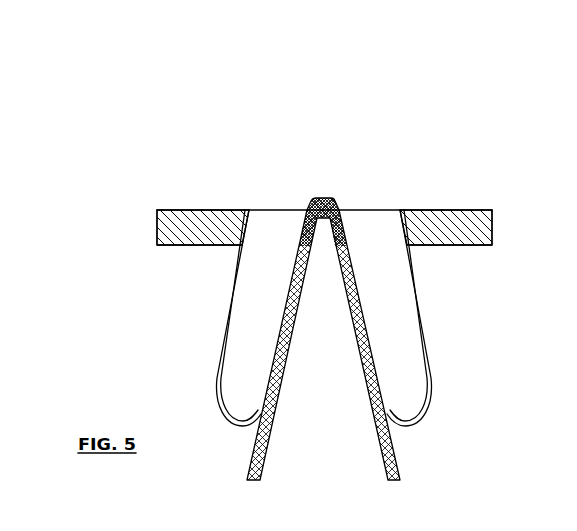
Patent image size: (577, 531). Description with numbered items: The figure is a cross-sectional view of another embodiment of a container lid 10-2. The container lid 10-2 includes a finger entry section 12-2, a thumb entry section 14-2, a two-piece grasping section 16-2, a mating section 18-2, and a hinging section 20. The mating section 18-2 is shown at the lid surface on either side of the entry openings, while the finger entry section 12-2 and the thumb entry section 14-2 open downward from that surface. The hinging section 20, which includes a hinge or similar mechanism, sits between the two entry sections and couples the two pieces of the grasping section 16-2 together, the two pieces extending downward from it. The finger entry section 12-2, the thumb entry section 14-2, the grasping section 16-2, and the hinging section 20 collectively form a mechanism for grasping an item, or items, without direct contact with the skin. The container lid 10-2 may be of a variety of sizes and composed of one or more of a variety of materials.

The container lid 10-2 is at (280, 293).
The finger entry section 12-2 is at (369, 197).
The thumb entry section 14-2 is at (281, 200).
The two-piece grasping section 16-2 is at (323, 293).
The mating section 18-2 is at (149, 228).
The hinging section 20 is at (366, 100).